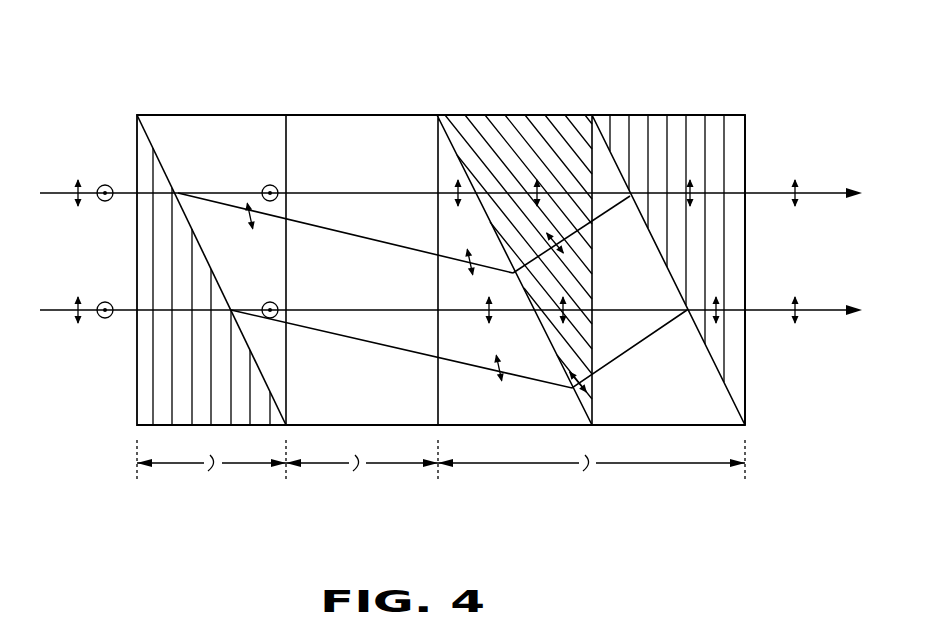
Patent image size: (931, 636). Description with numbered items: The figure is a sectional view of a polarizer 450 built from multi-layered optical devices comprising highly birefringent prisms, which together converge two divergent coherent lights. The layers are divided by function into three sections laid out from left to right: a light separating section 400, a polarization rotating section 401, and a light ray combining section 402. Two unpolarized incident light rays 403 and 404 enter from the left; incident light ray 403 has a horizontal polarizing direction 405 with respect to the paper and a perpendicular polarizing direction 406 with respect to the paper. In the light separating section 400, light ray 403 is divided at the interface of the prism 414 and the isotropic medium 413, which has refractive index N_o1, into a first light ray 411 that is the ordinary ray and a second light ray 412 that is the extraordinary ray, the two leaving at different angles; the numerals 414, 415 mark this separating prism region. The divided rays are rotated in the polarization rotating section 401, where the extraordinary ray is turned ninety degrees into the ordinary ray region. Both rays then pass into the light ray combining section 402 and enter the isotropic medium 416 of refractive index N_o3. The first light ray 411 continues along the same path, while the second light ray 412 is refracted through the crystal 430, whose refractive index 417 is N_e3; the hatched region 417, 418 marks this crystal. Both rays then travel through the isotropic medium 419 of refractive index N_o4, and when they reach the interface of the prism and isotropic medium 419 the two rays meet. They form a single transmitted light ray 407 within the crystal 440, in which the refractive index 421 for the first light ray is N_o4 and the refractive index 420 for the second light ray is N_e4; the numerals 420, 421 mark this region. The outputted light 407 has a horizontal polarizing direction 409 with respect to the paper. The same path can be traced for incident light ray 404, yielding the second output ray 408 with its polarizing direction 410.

The light separating section 400 is at (211, 490).
The polarization rotating section 401 is at (362, 490).
The light ray combining section 402 is at (591, 492).
The unpolarized incident light ray 403 is at (43, 190).
The unpolarized incident light ray 404 is at (50, 300).
The horizontal polarizing direction 405 is at (122, 131).
The perpendicular polarizing direction 406 is at (190, 259).
The transmitted light ray 407 is at (838, 192).
The second axis exit direction 408 is at (835, 306).
The horizontal polarizing direction 409 is at (792, 184).
The vertical adjustment arrow second axis 410 is at (792, 303).
The first light ray 411 is at (323, 192).
The second light ray 412 is at (395, 246).
The isotropic medium 413 is at (216, 150).
The prism 414 is at (155, 286).
The first zone hatched region 415 is at (193, 379).
The isotropic medium 416 is at (516, 405).
The refractive index 417 is at (528, 233).
The cross-hatched region 418 is at (512, 141).
The isotropic medium 419 is at (697, 393).
The refractive index 420 is at (697, 221).
The refractive index 421 is at (687, 138).
The crystal 430 is at (457, 111).
The crystal 440 is at (631, 109).
The polarizer 450 is at (168, 91).